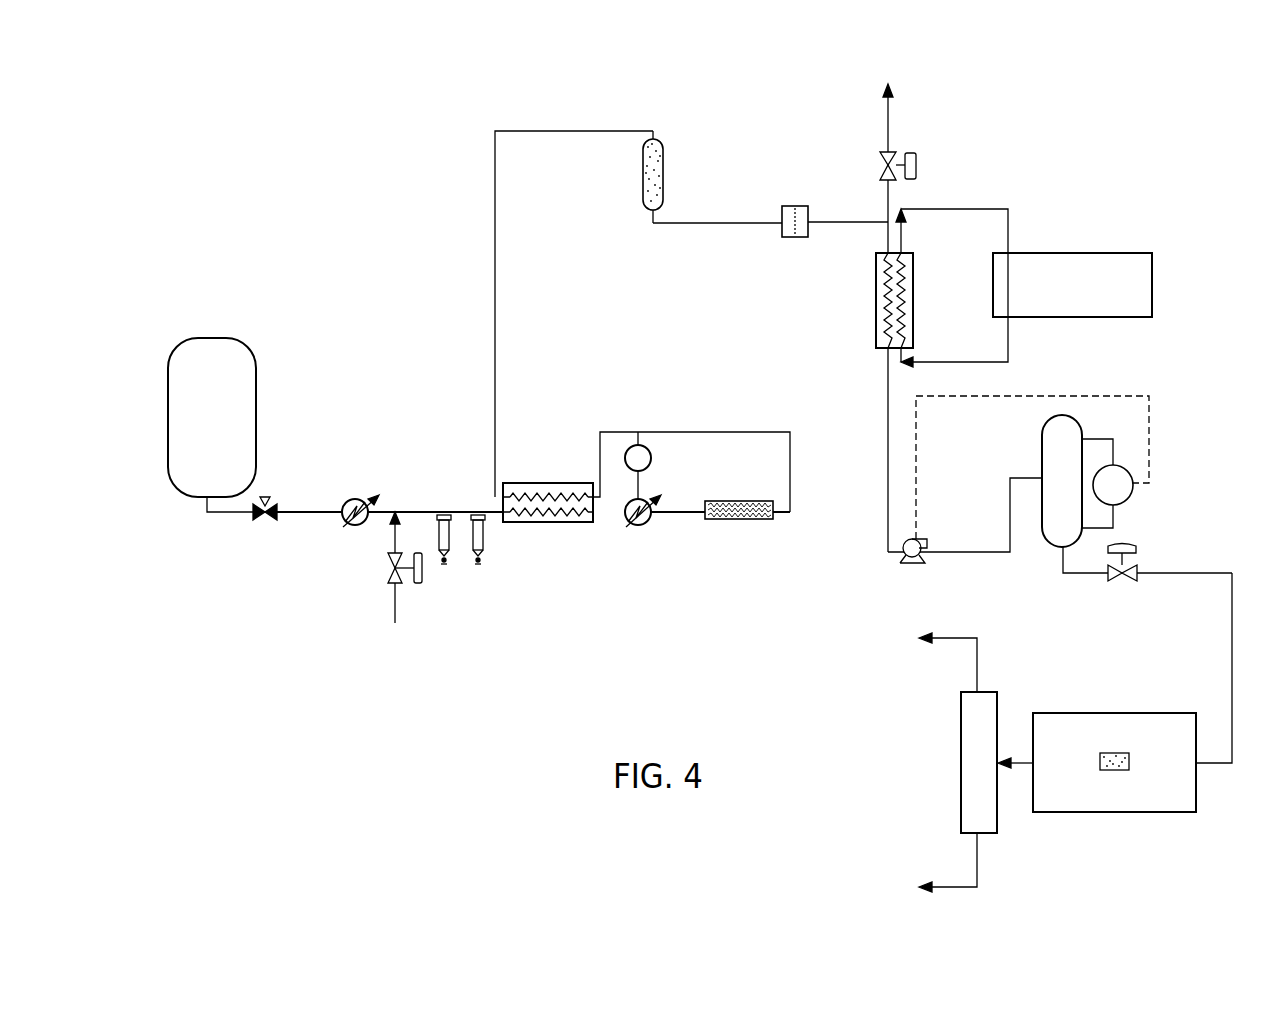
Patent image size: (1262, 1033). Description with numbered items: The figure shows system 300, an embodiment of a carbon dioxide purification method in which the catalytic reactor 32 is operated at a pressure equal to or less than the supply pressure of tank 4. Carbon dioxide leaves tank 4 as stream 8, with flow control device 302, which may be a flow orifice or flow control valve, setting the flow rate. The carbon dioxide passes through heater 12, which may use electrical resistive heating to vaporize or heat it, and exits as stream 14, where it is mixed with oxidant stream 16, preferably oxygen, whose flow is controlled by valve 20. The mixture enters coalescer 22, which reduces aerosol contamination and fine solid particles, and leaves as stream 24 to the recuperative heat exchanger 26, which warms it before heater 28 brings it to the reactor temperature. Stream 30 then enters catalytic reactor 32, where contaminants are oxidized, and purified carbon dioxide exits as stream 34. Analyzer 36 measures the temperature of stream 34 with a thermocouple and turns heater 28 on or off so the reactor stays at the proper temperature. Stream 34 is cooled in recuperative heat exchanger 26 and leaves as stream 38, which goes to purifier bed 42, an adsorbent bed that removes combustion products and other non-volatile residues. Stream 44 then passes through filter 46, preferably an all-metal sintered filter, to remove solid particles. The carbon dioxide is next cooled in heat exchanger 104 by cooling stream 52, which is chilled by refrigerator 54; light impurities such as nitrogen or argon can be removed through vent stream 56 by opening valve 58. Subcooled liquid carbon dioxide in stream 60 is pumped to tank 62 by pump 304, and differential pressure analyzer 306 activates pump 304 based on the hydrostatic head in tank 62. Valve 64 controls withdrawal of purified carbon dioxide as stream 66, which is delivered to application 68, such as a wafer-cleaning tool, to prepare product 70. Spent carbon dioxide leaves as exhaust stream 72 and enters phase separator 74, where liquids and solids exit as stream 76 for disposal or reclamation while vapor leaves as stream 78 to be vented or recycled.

The system 300 is at (412, 145).
The tank 4 is at (204, 431).
The stream 8 is at (296, 509).
The flow control device 302 is at (265, 522).
The heater 12 is at (356, 499).
The stream 14 is at (386, 507).
The oxidant stream 16 is at (392, 535).
The valve 20 is at (393, 578).
The coalescer 22 is at (447, 553).
The stream 24 is at (495, 518).
The recuperative heat exchanger 26 is at (553, 523).
The heater 28 is at (640, 526).
The stream 30 is at (683, 515).
The catalytic reactor 32 is at (742, 520).
The stream 34 is at (790, 515).
The analyzer 36 is at (652, 458).
The stream 38 is at (497, 313).
The purifier bed 42 is at (642, 178).
The stream 44 is at (693, 224).
The filter 46 is at (783, 210).
The cooling stream 52 is at (952, 360).
The refrigerator 54 is at (1059, 297).
The vent stream 56 is at (886, 121).
The valve 58 is at (918, 165).
The stream 60 is at (886, 378).
The tank 62 is at (1049, 493).
The valve 64 is at (1126, 578).
The stream 66 is at (1230, 656).
The application 68 is at (1143, 813).
The product 70 is at (1132, 757).
The exhaust stream 72 is at (1020, 756).
The phase separator 74 is at (966, 773).
The stream 76 is at (951, 885).
The stream 78 is at (950, 642).
The heat exchanger 104 is at (875, 313).
The pump 304 is at (905, 561).
The differential pressure analyzer 306 is at (1133, 495).